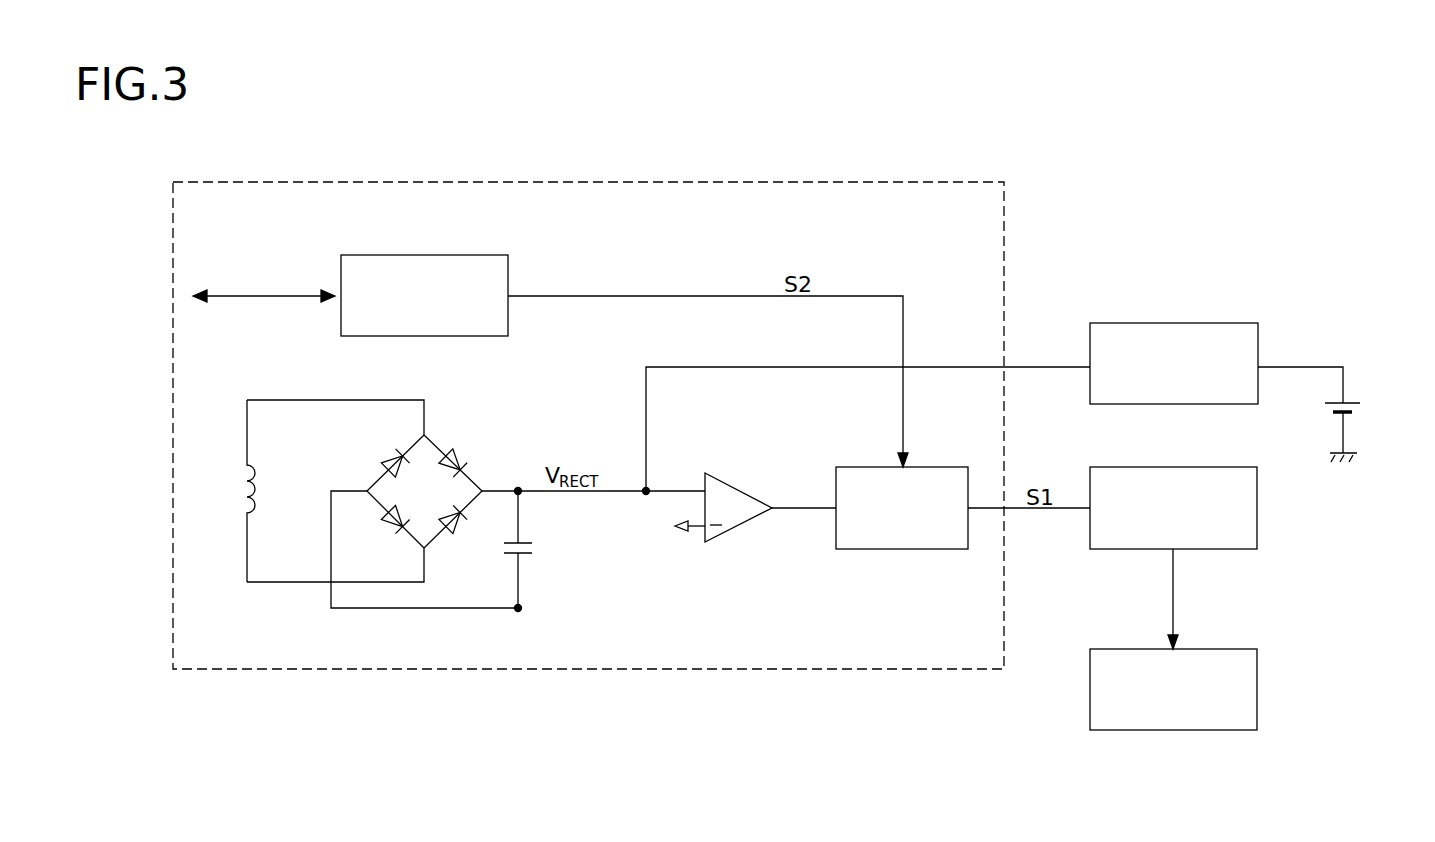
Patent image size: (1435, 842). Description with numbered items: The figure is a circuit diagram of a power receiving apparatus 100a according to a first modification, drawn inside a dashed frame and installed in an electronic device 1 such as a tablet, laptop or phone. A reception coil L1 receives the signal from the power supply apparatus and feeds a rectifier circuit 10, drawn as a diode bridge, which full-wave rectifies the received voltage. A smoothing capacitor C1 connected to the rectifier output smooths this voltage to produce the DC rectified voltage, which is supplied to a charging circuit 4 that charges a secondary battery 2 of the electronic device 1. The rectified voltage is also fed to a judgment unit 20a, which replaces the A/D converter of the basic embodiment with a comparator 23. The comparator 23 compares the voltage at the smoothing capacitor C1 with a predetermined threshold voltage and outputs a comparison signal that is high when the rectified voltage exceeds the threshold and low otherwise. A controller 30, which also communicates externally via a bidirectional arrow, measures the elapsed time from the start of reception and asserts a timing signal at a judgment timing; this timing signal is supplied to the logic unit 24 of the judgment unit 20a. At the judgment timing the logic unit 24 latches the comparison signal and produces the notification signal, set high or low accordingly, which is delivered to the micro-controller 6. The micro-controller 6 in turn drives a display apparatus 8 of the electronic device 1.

The electronic device 1 is at (724, 822).
The secondary battery 2 is at (1363, 408).
The charging circuit 4 is at (1215, 323).
The micro-controller 6 is at (1258, 507).
The display apparatus 8 is at (1258, 680).
The rectifier circuit 10 is at (480, 467).
The judgment unit 20a is at (815, 519).
The comparator 23 is at (729, 482).
The logic unit 24 is at (903, 483).
The controller 30 is at (454, 255).
The power receiving apparatus 100a is at (578, 670).
The reception coil L1 is at (236, 495).
The smoothing capacitor C1 is at (540, 548).